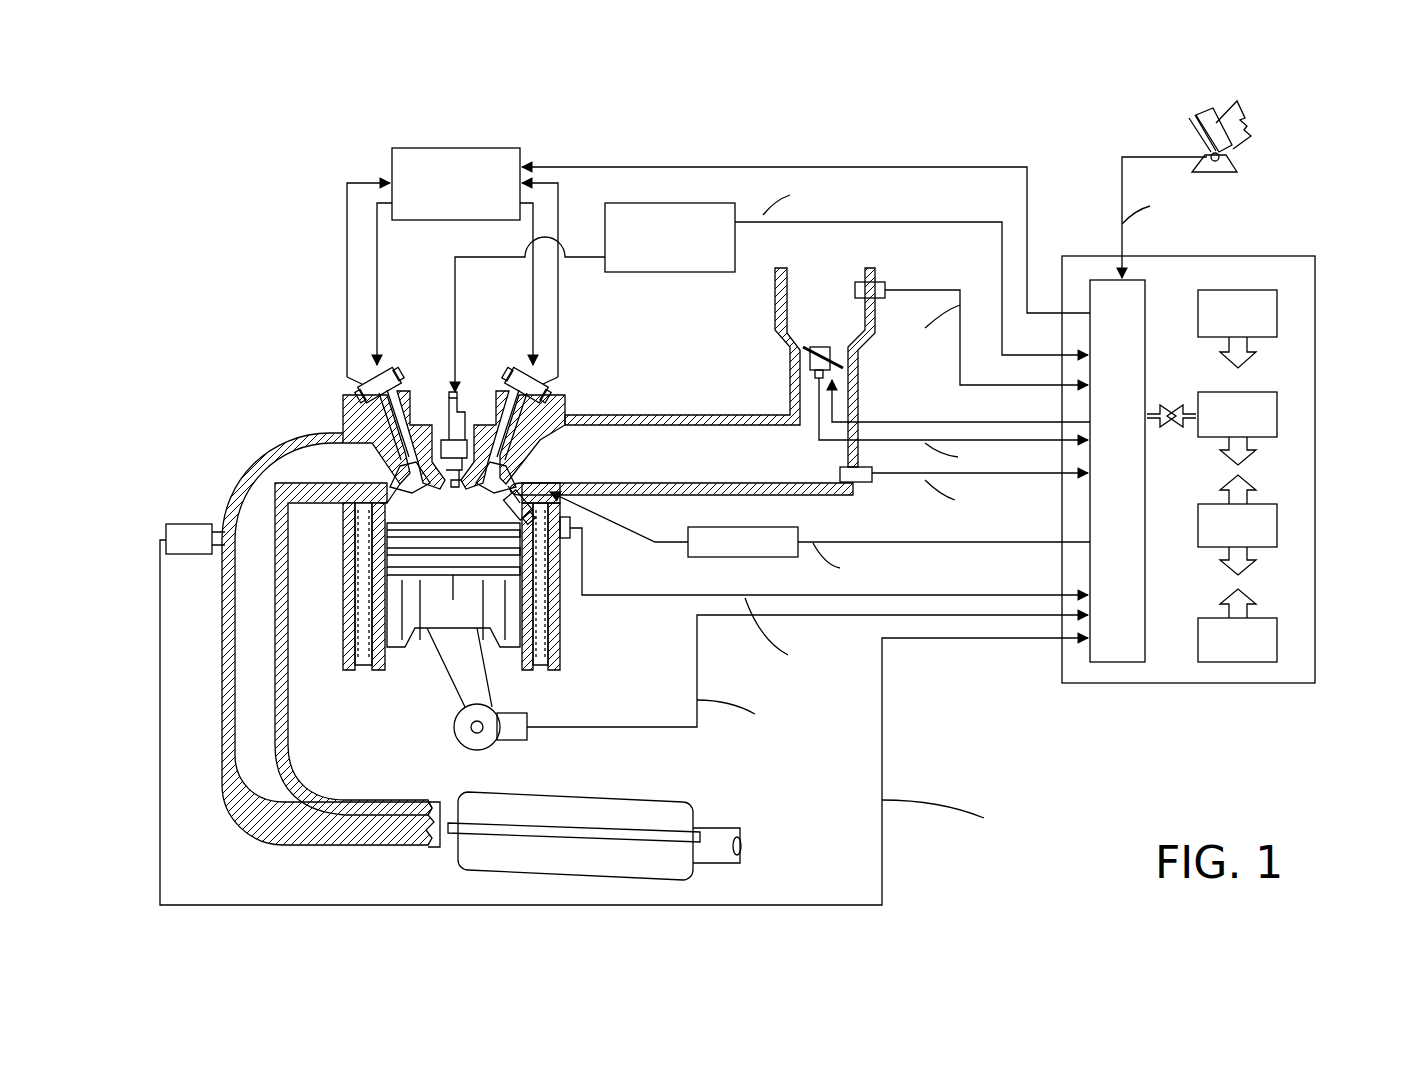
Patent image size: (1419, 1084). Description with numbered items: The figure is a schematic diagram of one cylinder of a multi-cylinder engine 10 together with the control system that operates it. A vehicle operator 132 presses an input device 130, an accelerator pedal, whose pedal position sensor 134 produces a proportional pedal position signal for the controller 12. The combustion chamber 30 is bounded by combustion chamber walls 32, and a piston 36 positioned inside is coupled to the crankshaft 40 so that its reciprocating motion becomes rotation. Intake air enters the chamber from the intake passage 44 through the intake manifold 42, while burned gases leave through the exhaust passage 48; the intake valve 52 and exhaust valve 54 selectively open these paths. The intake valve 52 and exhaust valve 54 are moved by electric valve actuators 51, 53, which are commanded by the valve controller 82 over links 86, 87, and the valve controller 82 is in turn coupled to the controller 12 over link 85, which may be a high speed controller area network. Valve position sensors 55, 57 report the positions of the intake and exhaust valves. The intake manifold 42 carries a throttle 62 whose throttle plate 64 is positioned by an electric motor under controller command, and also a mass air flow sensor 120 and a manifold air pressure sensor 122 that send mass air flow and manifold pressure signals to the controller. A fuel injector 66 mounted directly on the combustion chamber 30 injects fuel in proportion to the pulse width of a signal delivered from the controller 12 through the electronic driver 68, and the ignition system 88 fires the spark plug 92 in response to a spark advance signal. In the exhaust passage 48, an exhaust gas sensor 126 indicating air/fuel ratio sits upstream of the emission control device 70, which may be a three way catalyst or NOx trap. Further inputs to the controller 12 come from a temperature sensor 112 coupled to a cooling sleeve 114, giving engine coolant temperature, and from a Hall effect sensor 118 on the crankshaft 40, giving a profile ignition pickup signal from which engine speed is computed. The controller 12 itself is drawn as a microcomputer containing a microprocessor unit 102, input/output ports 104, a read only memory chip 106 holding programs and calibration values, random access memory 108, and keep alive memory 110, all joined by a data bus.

The engine 10 is at (268, 340).
The controller 12 is at (1300, 262).
The combustion chamber 30 is at (440, 535).
The combustion chamber walls 32 is at (388, 657).
The piston 36 is at (433, 650).
The crankshaft 40 is at (462, 748).
The intake manifold 42 is at (836, 318).
The intake passage 44 is at (766, 471).
The exhaust passage 48 is at (320, 478).
The electric valve actuator 51 is at (522, 380).
The intake valve 52 is at (505, 458).
The electric valve actuator 53 is at (392, 380).
The exhaust valve 54 is at (390, 470).
The valve position sensor 55 is at (548, 380).
The valve position sensor 57 is at (360, 380).
The throttle 62 is at (845, 360).
The throttle plate 64 is at (803, 349).
The fuel injector 66 is at (560, 515).
The electronic driver 68 is at (718, 558).
The emission control device 70 is at (648, 800).
The valve controller 82 is at (405, 148).
The link 85 is at (712, 167).
The link 86 is at (530, 306).
The link 87 is at (381, 296).
The ignition system 88 is at (636, 273).
The spark plug 92 is at (465, 408).
The microprocessor unit 102 is at (1278, 410).
The input/output ports 104 is at (1147, 290).
The read only memory chip 106 is at (1278, 310).
The random access memory 108 is at (1278, 523).
The keep alive memory 110 is at (1278, 637).
The temperature sensor 112 is at (575, 530).
The cooling sleeve 114 is at (555, 620).
The Hall effect sensor 118 is at (520, 742).
The mass air flow sensor 120 is at (875, 282).
The manifold air pressure sensor 122 is at (855, 484).
The exhaust gas sensor 126 is at (166, 530).
The input device 130 is at (1195, 132).
The vehicle operator 132 is at (1248, 120).
The pedal position sensor 134 is at (1224, 158).